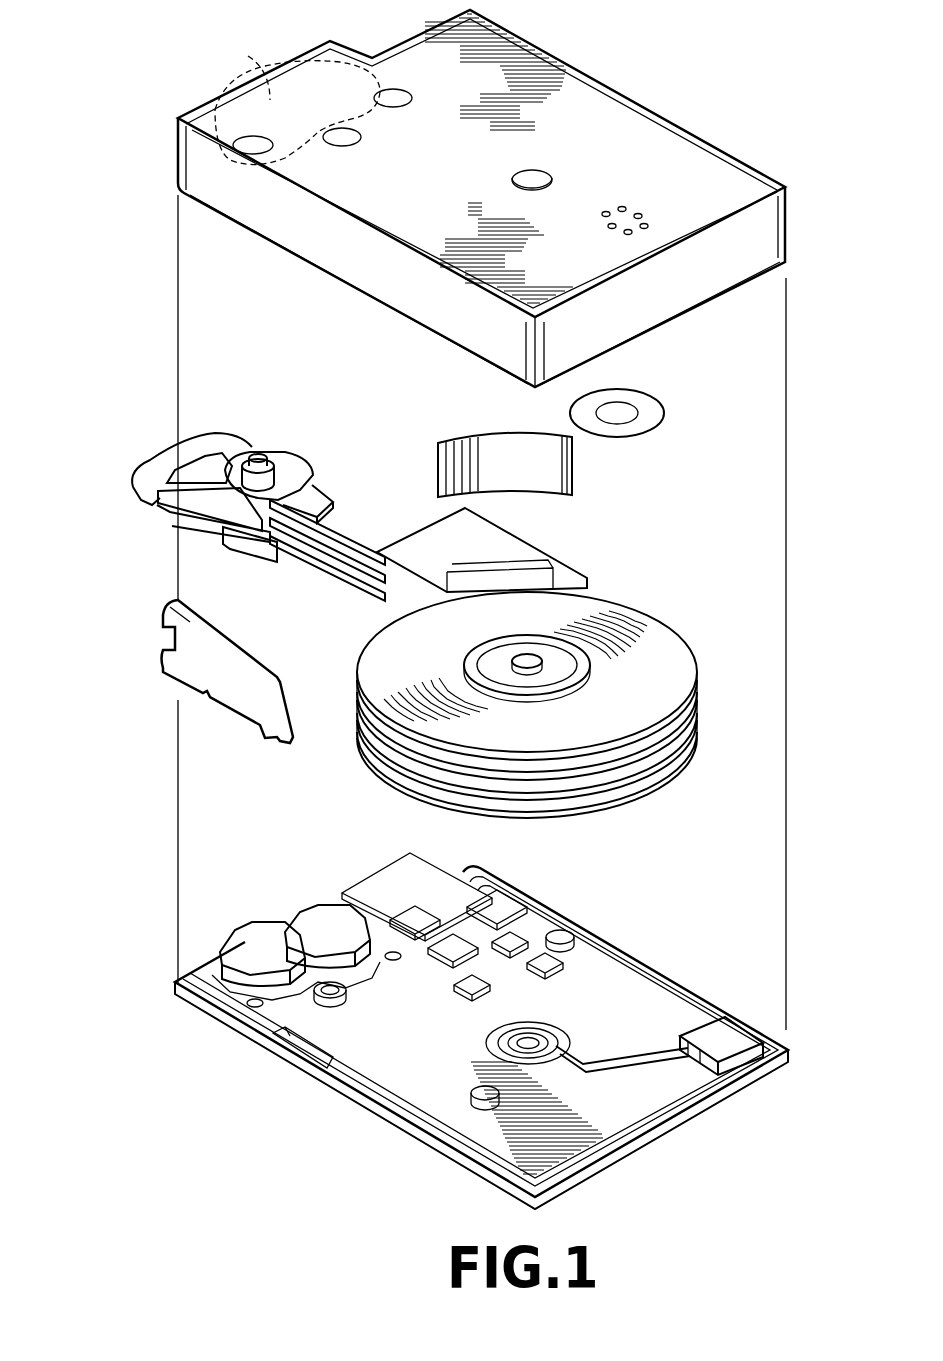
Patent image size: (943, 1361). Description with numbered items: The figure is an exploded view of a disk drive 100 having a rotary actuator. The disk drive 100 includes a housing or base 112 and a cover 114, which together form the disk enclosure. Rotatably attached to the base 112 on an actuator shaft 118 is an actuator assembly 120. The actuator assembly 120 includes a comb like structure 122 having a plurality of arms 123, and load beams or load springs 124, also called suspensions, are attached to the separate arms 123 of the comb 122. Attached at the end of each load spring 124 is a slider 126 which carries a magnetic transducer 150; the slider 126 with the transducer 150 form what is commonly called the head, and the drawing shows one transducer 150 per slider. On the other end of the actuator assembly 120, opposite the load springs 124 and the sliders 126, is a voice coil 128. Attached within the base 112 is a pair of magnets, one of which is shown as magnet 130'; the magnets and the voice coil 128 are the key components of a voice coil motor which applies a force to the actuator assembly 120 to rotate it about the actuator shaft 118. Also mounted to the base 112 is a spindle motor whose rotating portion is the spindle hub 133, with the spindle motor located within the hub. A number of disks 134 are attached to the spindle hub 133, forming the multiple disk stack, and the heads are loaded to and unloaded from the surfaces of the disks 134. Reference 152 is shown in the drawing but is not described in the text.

The disk drive 100 is at (136, 38).
The base 112 is at (665, 1000).
The cover 114 is at (572, 88).
The actuator shaft 118 is at (260, 452).
The actuator assembly 120 is at (260, 548).
The comb like structure 122 is at (305, 562).
The arms 123 is at (290, 470).
The load beams or load springs 124 is at (318, 497).
The slider 126 is at (365, 595).
The voice coil 128 is at (155, 472).
The magnet 130' is at (283, 98).
The spindle hub 133 is at (525, 655).
The disks 134 is at (668, 650).
The magnetic transducer 150 is at (375, 597).
The slider / head 152 is at (387, 607).